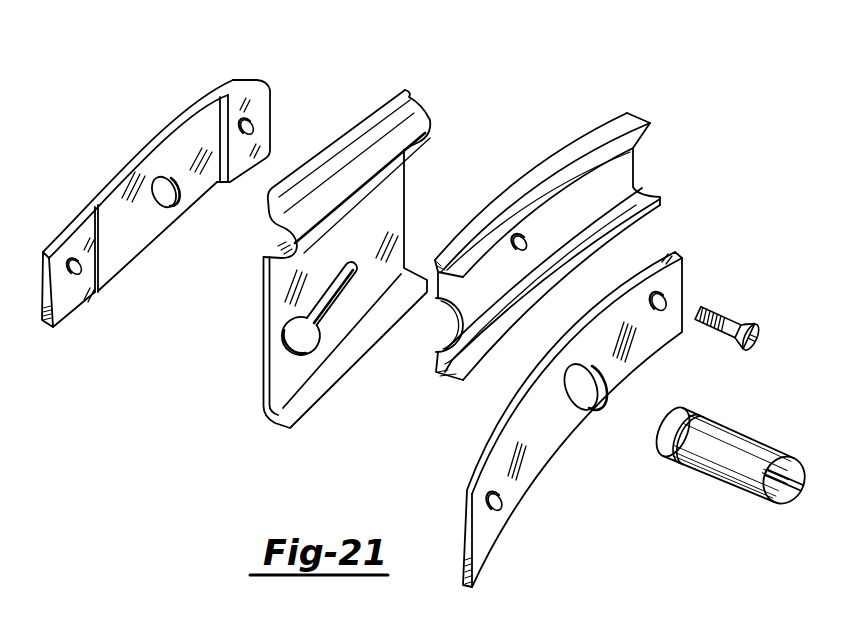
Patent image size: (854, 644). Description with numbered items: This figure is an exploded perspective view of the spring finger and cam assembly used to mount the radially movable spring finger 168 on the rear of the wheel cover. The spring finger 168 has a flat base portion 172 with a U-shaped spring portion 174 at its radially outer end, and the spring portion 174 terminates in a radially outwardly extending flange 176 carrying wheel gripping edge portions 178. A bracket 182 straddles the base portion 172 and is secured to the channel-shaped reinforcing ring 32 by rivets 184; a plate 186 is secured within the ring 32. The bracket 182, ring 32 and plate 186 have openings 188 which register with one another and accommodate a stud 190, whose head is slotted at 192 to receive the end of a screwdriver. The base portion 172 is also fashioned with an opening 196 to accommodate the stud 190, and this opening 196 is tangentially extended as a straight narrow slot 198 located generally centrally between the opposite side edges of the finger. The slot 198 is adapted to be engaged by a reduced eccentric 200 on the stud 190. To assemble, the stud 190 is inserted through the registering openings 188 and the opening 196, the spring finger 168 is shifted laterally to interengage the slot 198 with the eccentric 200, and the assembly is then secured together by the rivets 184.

The reinforcing ring 32 is at (625, 128).
The spring finger 168 is at (349, 250).
The base portion 172 is at (277, 320).
The spring portion 174 is at (378, 150).
The flange 176 is at (377, 94).
The wheel gripping edge portions 178 is at (405, 90).
The bracket 182 is at (240, 78).
The rivets 184 is at (740, 327).
The plate 186 is at (678, 254).
The openings 188 is at (163, 200).
The stud 190 is at (735, 448).
The slot 192 is at (753, 493).
The opening 196 is at (300, 340).
The slot 198 is at (352, 266).
The eccentric 200 is at (697, 418).